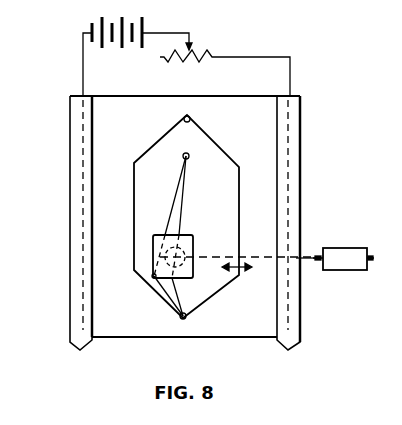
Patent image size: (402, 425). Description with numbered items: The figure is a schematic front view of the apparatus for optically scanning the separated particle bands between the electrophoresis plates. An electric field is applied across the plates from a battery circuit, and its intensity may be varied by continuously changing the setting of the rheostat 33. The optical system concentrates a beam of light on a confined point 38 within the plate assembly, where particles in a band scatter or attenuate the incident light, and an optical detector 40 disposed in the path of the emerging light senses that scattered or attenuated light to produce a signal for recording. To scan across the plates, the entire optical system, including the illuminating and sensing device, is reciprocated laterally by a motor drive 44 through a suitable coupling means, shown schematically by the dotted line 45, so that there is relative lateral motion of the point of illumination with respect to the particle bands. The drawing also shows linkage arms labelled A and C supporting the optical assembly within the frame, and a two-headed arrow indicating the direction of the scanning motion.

The rheostat 33 is at (194, 49).
The confined point 38 is at (177, 256).
The optical detector 40 is at (153, 247).
The motor drive 44 is at (358, 270).
The coupling means 45 is at (300, 258).
The arm A of linkage A is at (171, 199).
The arm C of linkage C is at (183, 212).